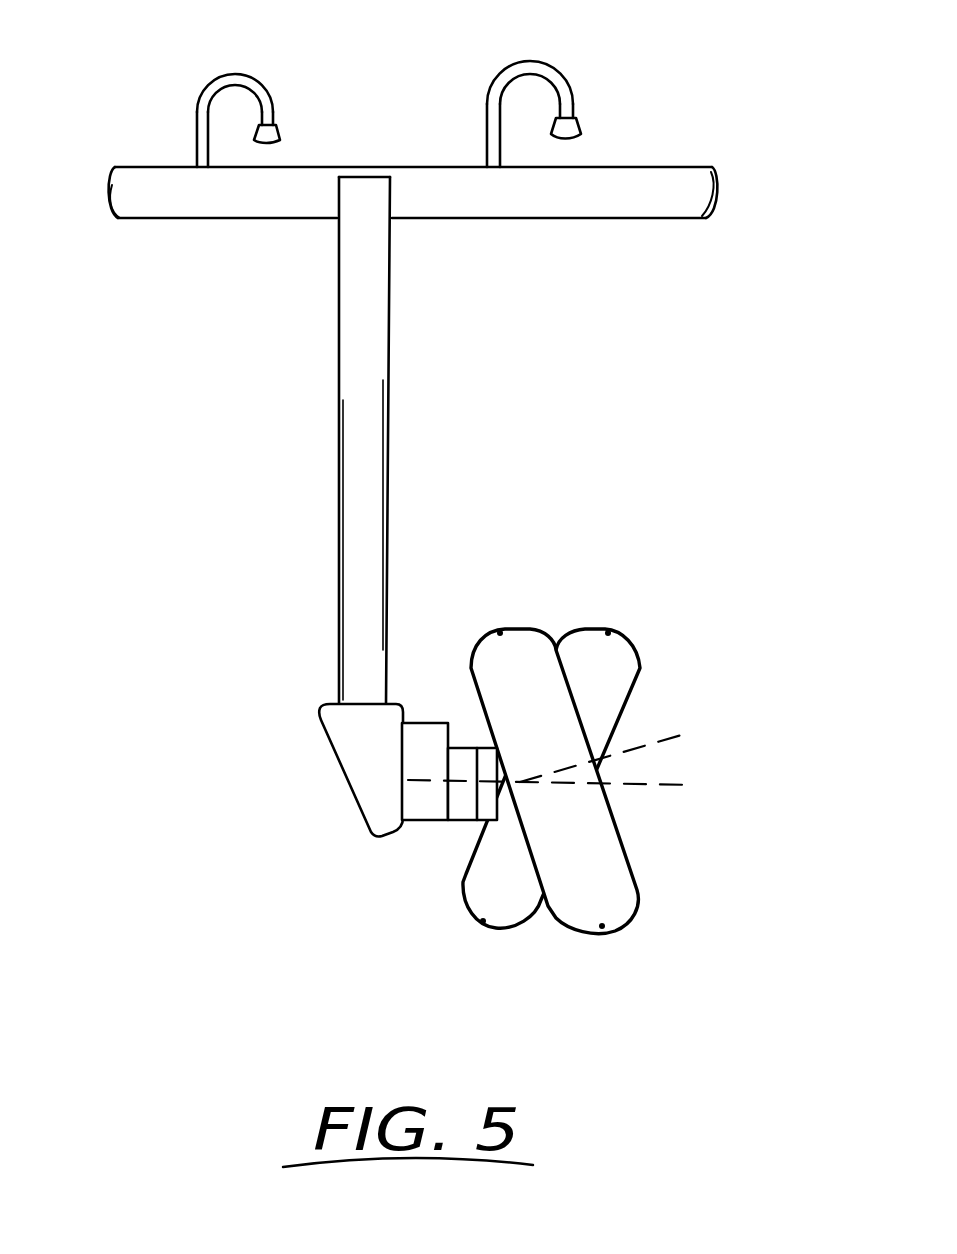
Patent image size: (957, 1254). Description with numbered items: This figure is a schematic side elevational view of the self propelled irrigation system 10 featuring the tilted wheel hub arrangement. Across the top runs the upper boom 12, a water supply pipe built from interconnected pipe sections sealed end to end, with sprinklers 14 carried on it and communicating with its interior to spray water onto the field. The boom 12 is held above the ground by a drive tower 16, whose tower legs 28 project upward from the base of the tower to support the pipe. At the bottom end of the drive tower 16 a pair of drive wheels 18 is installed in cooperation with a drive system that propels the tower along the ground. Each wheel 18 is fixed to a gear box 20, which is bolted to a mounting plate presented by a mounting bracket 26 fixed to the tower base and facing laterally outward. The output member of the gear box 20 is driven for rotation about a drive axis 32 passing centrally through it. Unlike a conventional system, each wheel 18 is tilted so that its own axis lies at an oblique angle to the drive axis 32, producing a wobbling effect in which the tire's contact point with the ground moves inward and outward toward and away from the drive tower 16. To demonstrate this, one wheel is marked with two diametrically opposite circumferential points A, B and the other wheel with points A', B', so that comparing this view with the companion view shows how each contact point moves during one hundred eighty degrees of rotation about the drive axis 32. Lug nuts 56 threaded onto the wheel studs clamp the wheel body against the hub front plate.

The self propelled irrigation system 10 is at (92, 97).
The upper boom 12 is at (436, 192).
The sprinklers 14 is at (562, 86).
The drive tower 16 is at (322, 478).
The tower legs 28 is at (370, 420).
The drive wheels 18 is at (513, 652).
The gear box 20 is at (420, 831).
The mounting brackets 26 is at (377, 759).
The drive axis 32 is at (682, 777).
The lug nuts 56 is at (670, 730).
The circumferential point A is at (493, 596).
The circumferential point A' is at (621, 599).
The circumferential point B is at (620, 958).
The circumferential point B' is at (460, 957).